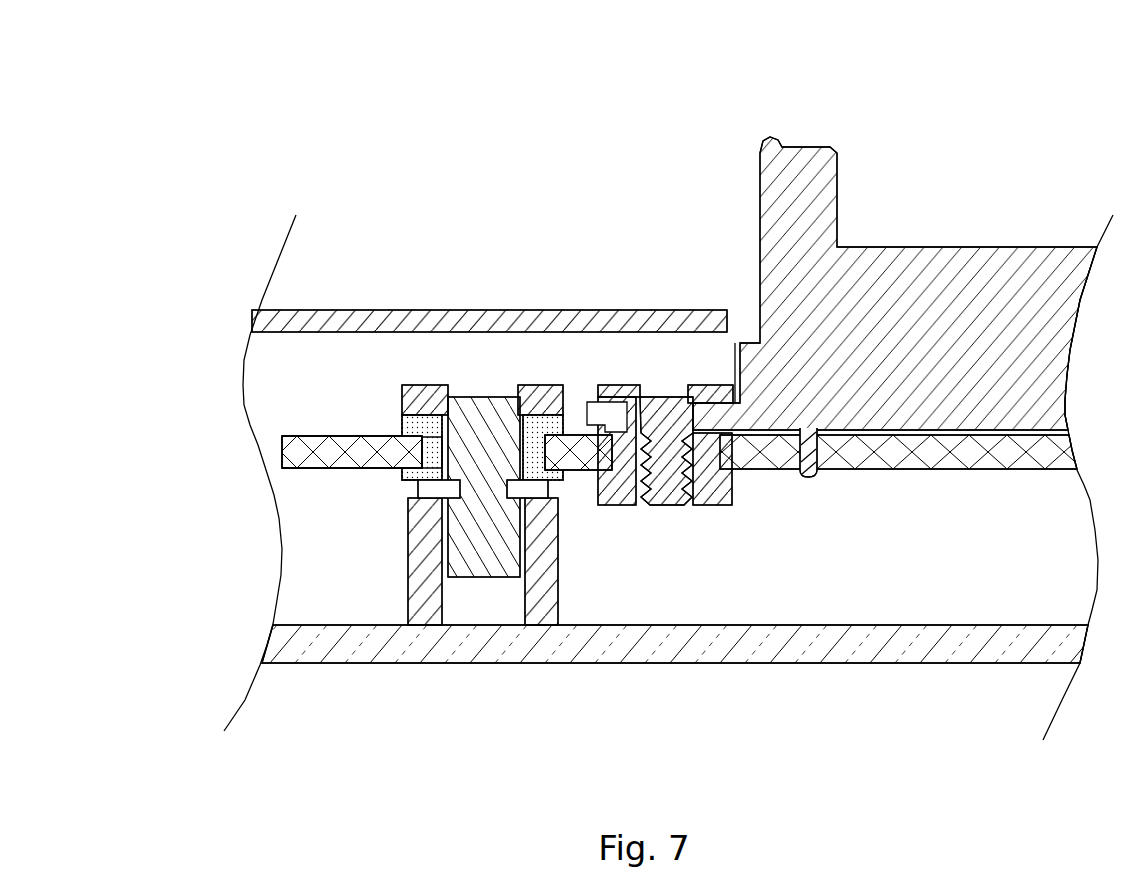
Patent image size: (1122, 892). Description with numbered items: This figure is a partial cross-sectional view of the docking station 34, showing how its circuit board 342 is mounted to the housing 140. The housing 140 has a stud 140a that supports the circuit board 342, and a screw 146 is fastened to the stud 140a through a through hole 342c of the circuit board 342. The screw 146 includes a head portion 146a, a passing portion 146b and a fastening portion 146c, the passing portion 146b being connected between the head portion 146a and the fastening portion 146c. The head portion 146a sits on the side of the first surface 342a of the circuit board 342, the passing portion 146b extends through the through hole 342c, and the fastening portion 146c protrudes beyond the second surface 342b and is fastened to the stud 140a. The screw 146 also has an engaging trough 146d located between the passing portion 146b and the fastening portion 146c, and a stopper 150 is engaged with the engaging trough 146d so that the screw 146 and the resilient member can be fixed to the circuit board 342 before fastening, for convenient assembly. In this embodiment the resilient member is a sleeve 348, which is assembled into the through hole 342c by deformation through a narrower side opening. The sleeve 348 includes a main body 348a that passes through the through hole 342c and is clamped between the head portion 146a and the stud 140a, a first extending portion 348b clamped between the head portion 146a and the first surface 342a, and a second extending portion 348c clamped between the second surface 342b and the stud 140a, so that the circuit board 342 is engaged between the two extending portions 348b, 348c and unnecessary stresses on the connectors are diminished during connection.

The docking station 34 is at (252, 70).
The housing 140 is at (675, 645).
The stud 140a is at (543, 593).
The screw 146 is at (590, 433).
The head portion 146a is at (545, 392).
The passing portion 146b is at (600, 422).
The fastening portion 146c is at (507, 547).
The engaging trough 146d is at (466, 512).
The stopper 150 is at (417, 490).
The circuit board 342 is at (607, 382).
The first surface 342a is at (300, 434).
The second surface 342b is at (413, 482).
The through hole 342c is at (440, 425).
The sleeve 348 is at (372, 312).
The main body 348a is at (413, 482).
The first extending portion 348b is at (420, 428).
The second extending portion 348c is at (365, 490).